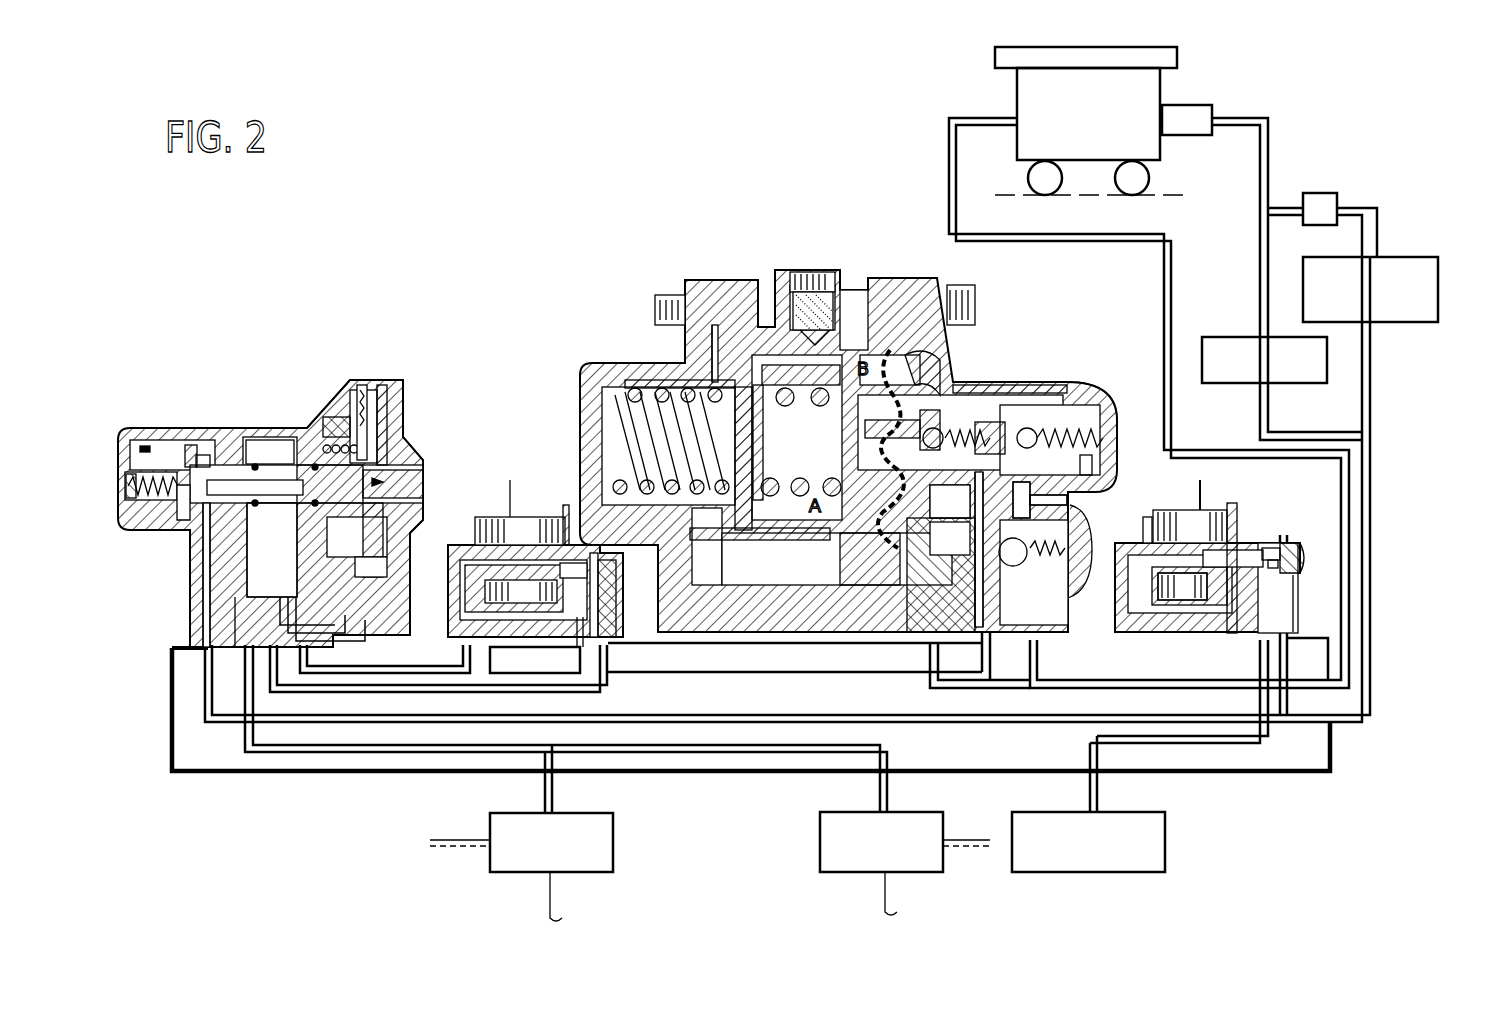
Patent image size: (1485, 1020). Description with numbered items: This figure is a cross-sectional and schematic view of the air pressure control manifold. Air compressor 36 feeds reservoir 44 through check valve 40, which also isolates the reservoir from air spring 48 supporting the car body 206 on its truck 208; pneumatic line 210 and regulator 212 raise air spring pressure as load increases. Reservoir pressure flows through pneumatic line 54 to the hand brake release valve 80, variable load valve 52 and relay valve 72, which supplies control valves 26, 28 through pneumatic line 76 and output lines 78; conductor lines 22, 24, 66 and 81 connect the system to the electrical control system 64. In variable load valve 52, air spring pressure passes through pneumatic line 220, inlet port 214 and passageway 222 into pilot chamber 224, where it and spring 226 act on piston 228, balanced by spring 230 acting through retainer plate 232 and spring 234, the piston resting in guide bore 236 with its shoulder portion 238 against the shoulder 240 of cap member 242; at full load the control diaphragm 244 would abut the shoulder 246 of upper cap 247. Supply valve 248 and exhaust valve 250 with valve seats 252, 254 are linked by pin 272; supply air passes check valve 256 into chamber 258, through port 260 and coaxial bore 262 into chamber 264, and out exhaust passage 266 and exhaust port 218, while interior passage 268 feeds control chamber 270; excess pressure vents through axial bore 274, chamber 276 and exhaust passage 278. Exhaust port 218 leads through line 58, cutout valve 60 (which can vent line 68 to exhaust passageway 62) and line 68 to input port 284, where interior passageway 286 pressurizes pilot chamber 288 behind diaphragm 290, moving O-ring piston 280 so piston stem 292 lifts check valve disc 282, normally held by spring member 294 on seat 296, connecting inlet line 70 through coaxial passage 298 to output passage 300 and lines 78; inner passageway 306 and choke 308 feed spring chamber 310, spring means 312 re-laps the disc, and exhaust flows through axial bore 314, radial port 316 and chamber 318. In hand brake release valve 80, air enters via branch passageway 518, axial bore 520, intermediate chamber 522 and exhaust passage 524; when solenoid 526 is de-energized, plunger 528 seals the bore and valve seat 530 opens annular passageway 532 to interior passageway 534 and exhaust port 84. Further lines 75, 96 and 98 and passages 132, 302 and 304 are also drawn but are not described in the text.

The conductor line 22 is at (462, 838).
The conductor line 24 is at (984, 838).
The control valve 26 is at (613, 858).
The control valve 28 is at (820, 832).
The air compressor 36 is at (1420, 263).
The check valve 40 is at (1325, 197).
The reservoir 44 is at (1230, 345).
The air spring 48 is at (1020, 93).
The variable load valve 52 is at (818, 240).
The pneumatic line 54 is at (1370, 635).
The line 58 is at (680, 678).
The cutout valve 60 is at (540, 498).
The exhaust passageway 62 is at (506, 668).
The electrical control system 64 is at (1120, 758).
The conductor line 66 is at (505, 470).
The line 68 is at (458, 692).
The inlet line 70 is at (200, 684).
The relay valve 72 is at (378, 348).
The pipe 75 is at (1163, 314).
The pneumatic line 76 is at (250, 684).
The output lines 78 is at (556, 792).
The hand brake release valve 80 is at (1270, 505).
The conductor line 81 is at (1204, 500).
The exhaust port 84 is at (1260, 652).
The pipe 96 is at (567, 896).
The pipe 98 is at (901, 893).
The passage 132 is at (463, 645).
The car body 206 is at (1045, 55).
The truck 208 is at (1085, 178).
The pneumatic line 210 is at (1268, 144).
The regulator 212 is at (1192, 113).
The inlet port 214 is at (930, 656).
The exhaust port 218 is at (985, 640).
The pneumatic line 220 is at (1128, 686).
The passageway 222 is at (795, 602).
The pilot chamber 224 is at (640, 372).
The spring 226 is at (628, 432).
The piston 228 is at (795, 540).
The spring 230 is at (1080, 398).
The retainer plate 232 is at (935, 410).
The spring 234 is at (770, 445).
The guide bore 236 is at (840, 330).
The shoulder portion 238 is at (718, 340).
The shoulder 240 is at (700, 352).
The cap member 242 is at (590, 400).
The control diaphragm 244 is at (942, 352).
The shoulder 246 is at (975, 410).
The upper cap 247 is at (910, 292).
The supply valve 248 is at (1048, 400).
The exhaust valve 250 is at (880, 480).
The valve seat 252 is at (1100, 438).
The valve seat 254 is at (790, 410).
The check valve 256 is at (1065, 600).
The chamber 258 is at (1032, 500).
The port 260 is at (1070, 500).
The coaxial bore 262 is at (1095, 465).
The chamber 264 is at (949, 501).
The exhaust passage 266 is at (954, 549).
The interior passage 268 is at (941, 575).
The control chamber 270 is at (902, 540).
The pin 272 is at (1005, 418).
The axial bore 274 is at (880, 432).
The chamber 276 is at (850, 555).
The exhaust passage 278 is at (830, 280).
The O-ring piston 280 is at (385, 474).
The check valve disc 282 is at (188, 445).
The input port 284 is at (258, 614).
The interior passageway 286 is at (385, 570).
The pilot chamber 288 is at (390, 400).
The diaphragm 290 is at (385, 392).
The piston stem 292 is at (205, 538).
The spring member 294 is at (126, 470).
The seat 296 is at (197, 448).
The coaxial passage 298 is at (210, 560).
The output passage 300 is at (262, 548).
The body 302 is at (192, 630).
The passage 304 is at (170, 528).
The inner passageway 306 is at (318, 435).
The choke 308 is at (315, 410).
The spring chamber 310 is at (380, 420).
The spring means 312 is at (412, 522).
The axial bore 314 is at (288, 478).
The radial port 316 is at (275, 512).
The chamber 318 is at (262, 470).
The branch passageway 518 is at (1290, 645).
The axial bore 520 is at (1300, 545).
The intermediate chamber 522 is at (1268, 548).
The exhaust passage 524 is at (1290, 600).
The solenoid 526 is at (1188, 522).
The plunger 528 is at (1228, 552).
The valve seat 530 is at (1285, 562).
The annular passageway 532 is at (1215, 580).
The interior passageway 534 is at (1144, 538).